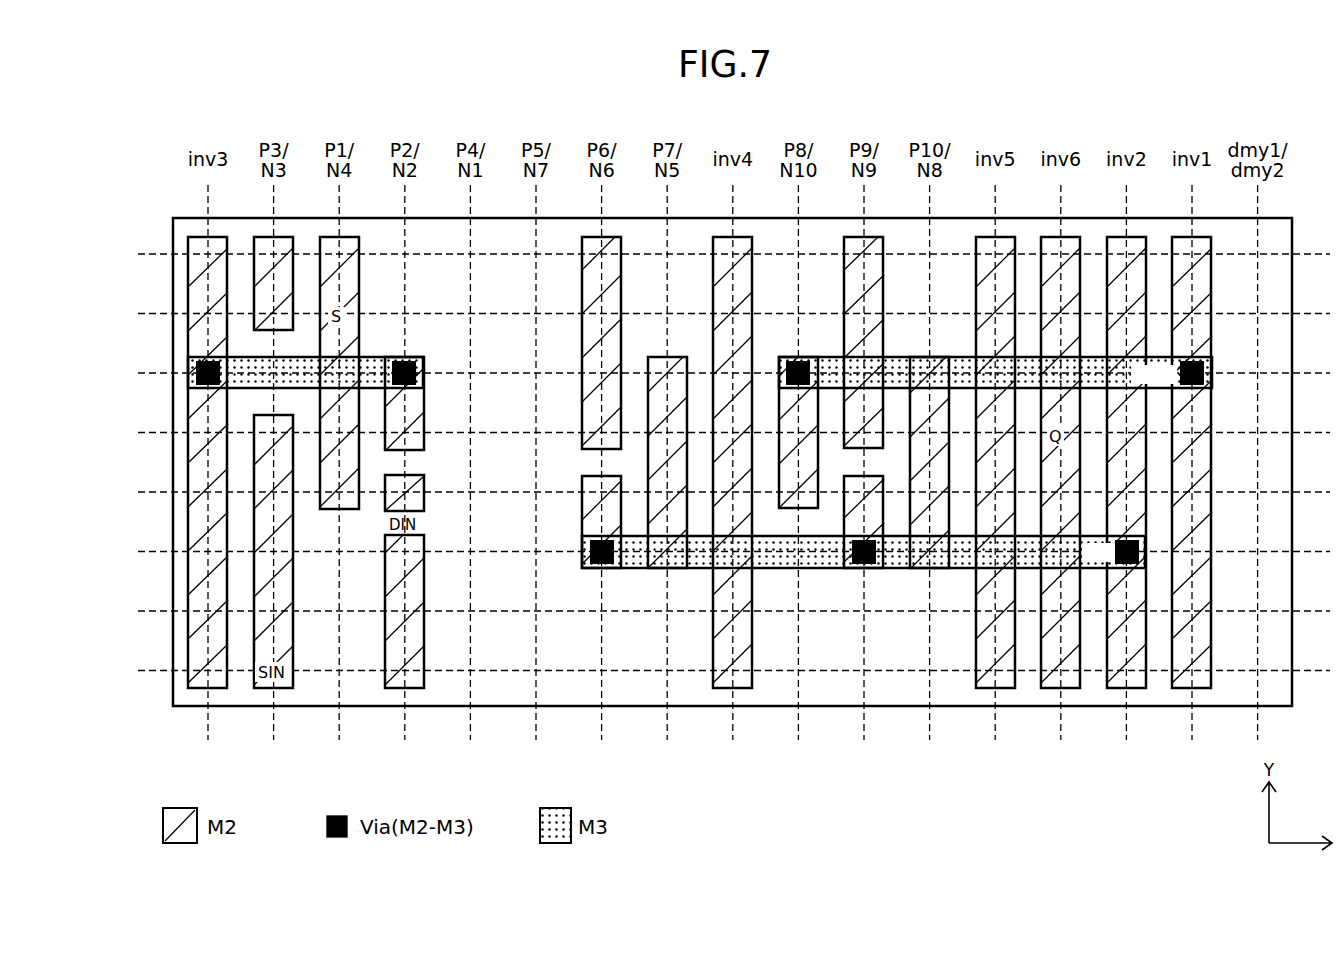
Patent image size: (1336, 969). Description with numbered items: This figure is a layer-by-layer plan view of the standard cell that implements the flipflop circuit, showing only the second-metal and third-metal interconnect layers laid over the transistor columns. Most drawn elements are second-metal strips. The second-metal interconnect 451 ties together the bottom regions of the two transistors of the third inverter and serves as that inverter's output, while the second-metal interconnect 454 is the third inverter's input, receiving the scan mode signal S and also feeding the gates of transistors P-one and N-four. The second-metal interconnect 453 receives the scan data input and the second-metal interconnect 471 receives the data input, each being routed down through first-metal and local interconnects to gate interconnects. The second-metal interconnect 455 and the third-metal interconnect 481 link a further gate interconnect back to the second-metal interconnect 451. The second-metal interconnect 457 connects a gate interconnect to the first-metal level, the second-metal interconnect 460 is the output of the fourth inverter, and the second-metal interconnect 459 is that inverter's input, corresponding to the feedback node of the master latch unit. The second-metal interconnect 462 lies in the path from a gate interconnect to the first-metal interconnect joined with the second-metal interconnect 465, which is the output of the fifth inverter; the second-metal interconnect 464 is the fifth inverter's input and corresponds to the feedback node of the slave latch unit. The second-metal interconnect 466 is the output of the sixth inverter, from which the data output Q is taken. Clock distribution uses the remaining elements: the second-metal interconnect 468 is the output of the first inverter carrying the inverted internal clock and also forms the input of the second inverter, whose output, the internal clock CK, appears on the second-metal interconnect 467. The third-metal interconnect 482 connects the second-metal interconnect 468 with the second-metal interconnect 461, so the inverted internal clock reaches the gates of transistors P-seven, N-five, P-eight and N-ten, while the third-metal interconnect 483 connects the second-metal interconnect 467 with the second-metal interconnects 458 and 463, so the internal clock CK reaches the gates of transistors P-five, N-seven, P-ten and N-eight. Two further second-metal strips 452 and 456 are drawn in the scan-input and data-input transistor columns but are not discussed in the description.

The M2 interconnect 451 is at (188, 398).
The M2 wiring of transistors P3/N3 (upper) 452 is at (253, 247).
The M2 interconnect 453 is at (254, 655).
The M2 interconnect 454 is at (318, 247).
The M2 interconnect 455 is at (424, 442).
The M2 wiring of transistors P2/N2 (lower) 456 is at (385, 655).
The M2 interconnect 457 is at (582, 299).
The M2 interconnect 458 is at (582, 500).
The M2 interconnect 459 is at (650, 358).
The M2 interconnect 460 is at (770, 287).
The M2 interconnect 461 is at (779, 483).
The M2 interconnect 462 is at (900, 287).
The M2 interconnect 463 is at (844, 500).
The M2 interconnect 464 is at (910, 443).
The M2 interconnect 465 is at (1015, 247).
The M2 interconnect 466 is at (1080, 247).
The M2 interconnect 467 is at (1146, 247).
The M2 interconnect 468 is at (1212, 247).
The M2 interconnect 471 is at (424, 500).
The M3 interconnect 481 is at (372, 358).
The M3 interconnect 482 is at (832, 358).
The M3 interconnect 483 is at (633, 568).